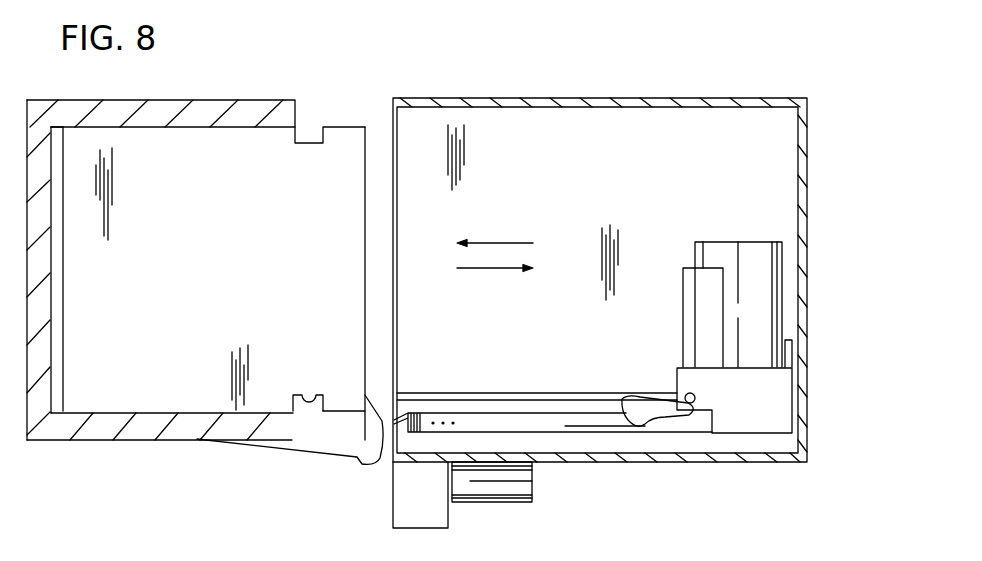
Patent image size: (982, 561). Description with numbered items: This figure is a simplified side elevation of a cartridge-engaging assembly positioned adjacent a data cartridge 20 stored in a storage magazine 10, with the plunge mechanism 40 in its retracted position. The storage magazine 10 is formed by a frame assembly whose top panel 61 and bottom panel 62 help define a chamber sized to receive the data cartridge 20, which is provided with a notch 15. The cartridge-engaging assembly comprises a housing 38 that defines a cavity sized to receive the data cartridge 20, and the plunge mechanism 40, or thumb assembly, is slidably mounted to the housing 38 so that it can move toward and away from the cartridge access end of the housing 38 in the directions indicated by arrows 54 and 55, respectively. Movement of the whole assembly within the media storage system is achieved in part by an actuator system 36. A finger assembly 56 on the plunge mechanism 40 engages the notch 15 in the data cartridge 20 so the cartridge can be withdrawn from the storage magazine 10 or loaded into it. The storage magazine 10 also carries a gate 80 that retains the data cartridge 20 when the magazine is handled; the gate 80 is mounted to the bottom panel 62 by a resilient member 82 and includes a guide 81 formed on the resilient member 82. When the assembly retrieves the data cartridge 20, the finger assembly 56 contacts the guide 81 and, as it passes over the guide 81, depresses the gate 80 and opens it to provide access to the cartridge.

The storage magazine 10 is at (312, 92).
The data cartridge 20 is at (244, 288).
The top panel 61 is at (167, 101).
The bottom panel 62 is at (147, 440).
The notch 15 is at (313, 395).
The guide 81 is at (362, 415).
The resilient member 82 is at (281, 442).
The gate 80 is at (350, 468).
The housing 38 is at (818, 143).
The plunge mechanism 40 is at (730, 233).
The arrow 54 is at (515, 242).
The arrow 55 is at (478, 268).
The finger assembly 56 is at (655, 433).
The actuator system 36 is at (490, 509).